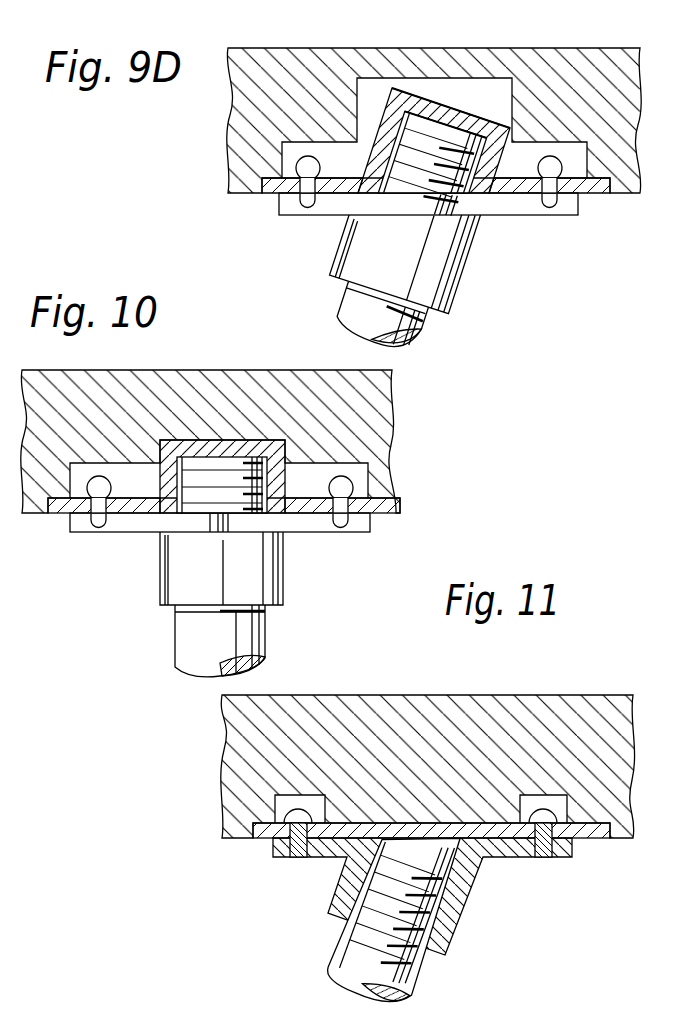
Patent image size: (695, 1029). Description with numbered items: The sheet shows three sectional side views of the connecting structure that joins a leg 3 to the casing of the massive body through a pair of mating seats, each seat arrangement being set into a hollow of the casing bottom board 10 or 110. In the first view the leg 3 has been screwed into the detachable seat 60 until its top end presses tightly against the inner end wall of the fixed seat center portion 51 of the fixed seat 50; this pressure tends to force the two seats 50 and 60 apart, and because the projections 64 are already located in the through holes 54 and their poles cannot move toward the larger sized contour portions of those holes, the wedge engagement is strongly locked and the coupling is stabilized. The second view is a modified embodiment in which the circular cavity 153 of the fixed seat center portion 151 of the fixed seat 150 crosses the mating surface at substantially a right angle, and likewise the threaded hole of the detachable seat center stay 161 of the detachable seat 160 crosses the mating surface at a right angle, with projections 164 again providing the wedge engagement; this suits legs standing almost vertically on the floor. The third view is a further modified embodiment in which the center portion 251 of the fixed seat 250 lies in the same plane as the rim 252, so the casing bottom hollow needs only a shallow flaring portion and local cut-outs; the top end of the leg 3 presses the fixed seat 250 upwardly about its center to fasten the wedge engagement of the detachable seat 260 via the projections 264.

In FIG. 9D, the base plate 10 is at (572, 53).
In FIG. 11, the base plate 10 is at (484, 701).
In FIG. 9D, the fixed seat 50 is at (405, 92).
In FIG. 9D, the fixed seat center portion 51 is at (464, 110).
In FIG. 9D, the through holes 54 is at (313, 206).
In FIG. 9D, the detachable seat 60 is at (488, 221).
In FIG. 9D, the projections 64 is at (297, 162).
In FIG. 9D, the leg 3 is at (423, 330).
In FIG. 10, the leg 3 is at (262, 640).
In FIG. 11, the leg 3 is at (420, 972).
In FIG. 10, the base plate 110 is at (244, 382).
In FIG. 10, the nut member 150 is at (181, 445).
In FIG. 10, the fixed seat center portion 151 is at (260, 448).
In FIG. 10, the circular cavity 153 is at (177, 482).
In FIG. 10, the fastener body 160 is at (288, 543).
In FIG. 10, the detachable seat center stay 161 is at (180, 586).
In FIG. 10, the ball detent 164 is at (350, 488).
In FIG. 11, the fixed seat 250 is at (515, 846).
In FIG. 11, the center portion 251 is at (380, 836).
In FIG. 11, the rim 252 is at (262, 834).
In FIG. 11, the fastener body 260 is at (487, 878).
In FIG. 11, the projections 264 is at (292, 815).